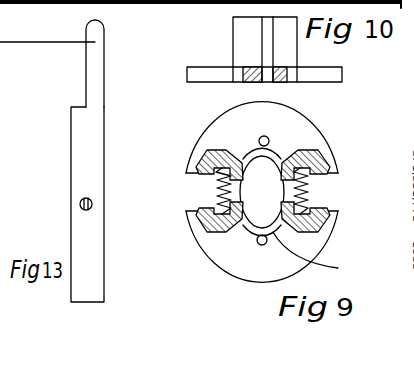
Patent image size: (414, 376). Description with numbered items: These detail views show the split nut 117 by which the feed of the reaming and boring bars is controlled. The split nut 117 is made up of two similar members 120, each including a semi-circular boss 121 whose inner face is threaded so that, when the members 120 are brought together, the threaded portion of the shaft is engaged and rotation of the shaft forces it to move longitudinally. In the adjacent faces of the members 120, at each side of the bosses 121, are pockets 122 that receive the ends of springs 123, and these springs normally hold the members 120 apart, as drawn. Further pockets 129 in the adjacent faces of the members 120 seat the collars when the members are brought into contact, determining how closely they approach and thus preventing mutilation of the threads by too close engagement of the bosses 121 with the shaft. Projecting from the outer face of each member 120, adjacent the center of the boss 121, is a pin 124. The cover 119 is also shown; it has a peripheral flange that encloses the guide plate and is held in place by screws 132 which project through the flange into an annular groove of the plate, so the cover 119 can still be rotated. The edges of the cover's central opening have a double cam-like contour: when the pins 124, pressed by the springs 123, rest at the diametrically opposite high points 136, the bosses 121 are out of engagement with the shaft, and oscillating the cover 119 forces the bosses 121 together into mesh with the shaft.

In FIG. 10, the split nut 117 is at (300, 70).
In FIG. 9, the split nut 117 is at (318, 242).
In FIG. 13, the cover 119 is at (93, 126).
In FIG. 10, the member 120 is at (190, 78).
In FIG. 9, the member 120 is at (215, 136).
In FIG. 10, the semi-circular boss 121 is at (233, 46).
In FIG. 9, the semi-circular boss 121 is at (273, 150).
In FIG. 9, the pocket 122 is at (212, 203).
In FIG. 9, the spring 123 is at (292, 190).
In FIG. 10, the pin 124 is at (273, 46).
In FIG. 9, the pin 124 is at (268, 137).
In FIG. 9, the pocket 129 is at (202, 172).
In FIG. 13, the screw 132 is at (80, 204).
In FIG. 13, the high point 136 is at (53, 204).